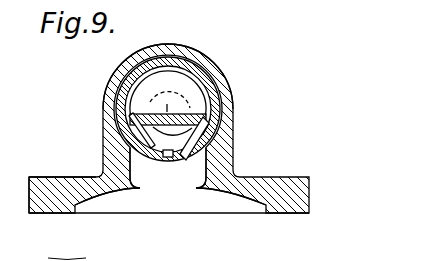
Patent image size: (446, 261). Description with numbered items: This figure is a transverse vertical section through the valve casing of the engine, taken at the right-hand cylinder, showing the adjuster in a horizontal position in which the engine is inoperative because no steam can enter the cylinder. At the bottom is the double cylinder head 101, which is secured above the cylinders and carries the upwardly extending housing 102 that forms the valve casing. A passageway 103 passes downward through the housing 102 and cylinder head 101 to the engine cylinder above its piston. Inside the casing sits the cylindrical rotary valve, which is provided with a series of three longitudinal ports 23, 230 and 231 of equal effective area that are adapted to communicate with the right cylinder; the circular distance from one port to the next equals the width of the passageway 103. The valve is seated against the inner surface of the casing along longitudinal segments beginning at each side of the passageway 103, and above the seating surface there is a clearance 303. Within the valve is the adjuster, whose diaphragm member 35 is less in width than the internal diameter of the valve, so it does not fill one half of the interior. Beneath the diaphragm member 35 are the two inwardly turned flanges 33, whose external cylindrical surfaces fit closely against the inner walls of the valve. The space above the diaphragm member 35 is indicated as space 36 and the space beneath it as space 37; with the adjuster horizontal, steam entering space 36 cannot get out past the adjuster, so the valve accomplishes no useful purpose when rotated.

The double cylinder head 101 is at (53, 176).
The housing 102 is at (125, 64).
The passageway 103 is at (170, 176).
The port 23 is at (121, 87).
The port 231 is at (217, 82).
The clearance 303 is at (226, 99).
The inwardly turned flanges 33 is at (187, 139).
The diaphragm member 35 is at (151, 103).
The space above the diaphragm 36 is at (157, 108).
The space beneath the diaphragm 37 is at (124, 131).
The port 230 is at (196, 161).